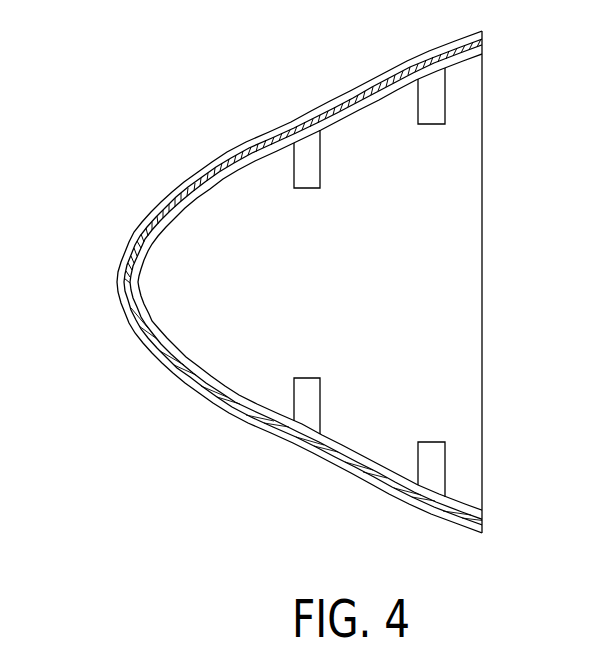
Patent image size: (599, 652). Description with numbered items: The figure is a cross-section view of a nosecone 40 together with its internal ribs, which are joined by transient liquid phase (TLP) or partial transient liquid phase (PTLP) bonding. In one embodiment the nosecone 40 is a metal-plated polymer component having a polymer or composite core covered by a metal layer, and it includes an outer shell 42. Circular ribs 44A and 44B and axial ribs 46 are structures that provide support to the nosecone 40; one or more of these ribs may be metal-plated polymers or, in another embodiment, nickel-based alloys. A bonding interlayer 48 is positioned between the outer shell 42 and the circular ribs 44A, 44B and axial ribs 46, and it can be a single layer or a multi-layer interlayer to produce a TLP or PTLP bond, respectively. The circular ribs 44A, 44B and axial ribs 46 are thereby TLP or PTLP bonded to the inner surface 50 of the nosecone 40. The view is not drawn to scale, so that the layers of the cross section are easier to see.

The nosecone 40 is at (104, 130).
The outer shell 42 is at (368, 85).
The circular rib 44A is at (305, 172).
The circular rib 44B is at (435, 115).
The axial ribs 46 is at (370, 105).
The bonding interlayer 48 is at (482, 44).
The inner surface 50 is at (374, 455).